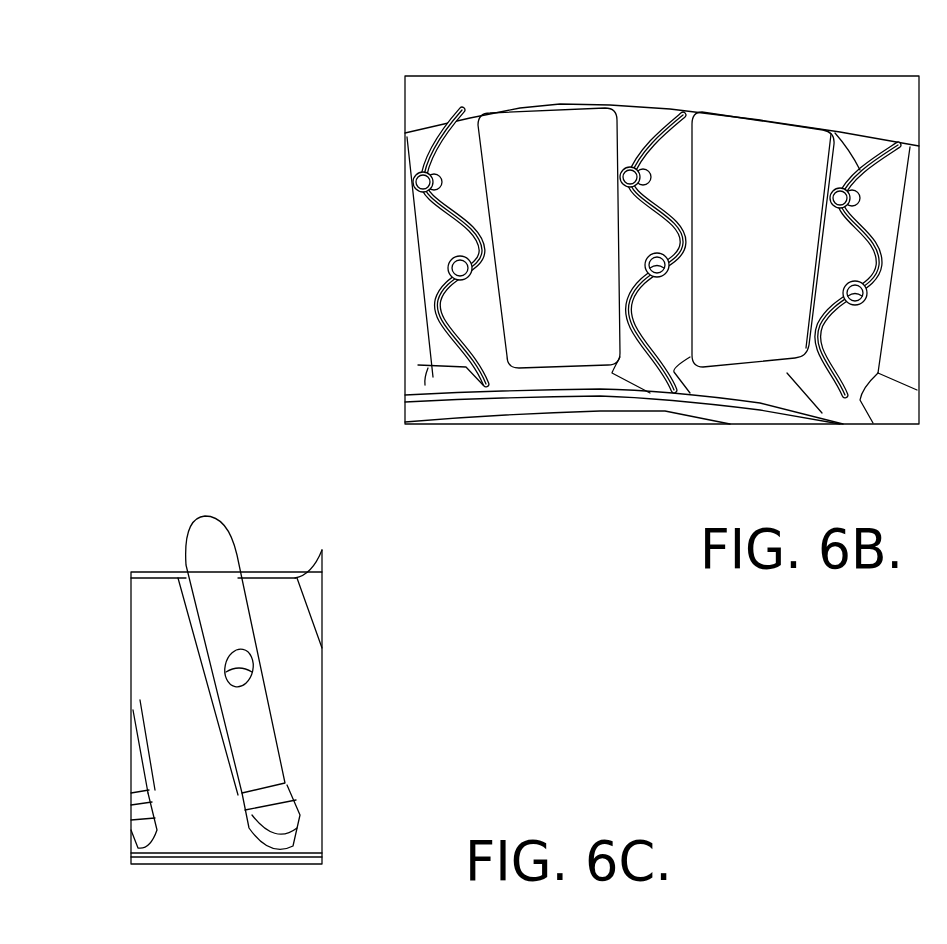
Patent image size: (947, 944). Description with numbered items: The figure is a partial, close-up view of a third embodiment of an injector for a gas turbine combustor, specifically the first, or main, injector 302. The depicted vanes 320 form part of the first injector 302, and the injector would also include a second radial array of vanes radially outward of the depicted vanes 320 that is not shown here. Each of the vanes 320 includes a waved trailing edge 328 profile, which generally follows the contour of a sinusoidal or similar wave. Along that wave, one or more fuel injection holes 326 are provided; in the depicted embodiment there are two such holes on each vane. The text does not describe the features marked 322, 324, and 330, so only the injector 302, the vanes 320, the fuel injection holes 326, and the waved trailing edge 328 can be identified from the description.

In FIG. 6B, the first injector 302 is at (591, 74).
In FIG. 6C, the first injector 302 is at (119, 606).
In FIG. 6B, the vanes 320 is at (425, 133).
In FIG. 6C, the vanes 320 is at (203, 647).
In FIG. 6B, the pocket 322 is at (522, 177).
In FIG. 6C, the aperture 324 is at (238, 662).
In FIG. 6B, the fuel injection holes 326 is at (654, 262).
In FIG. 6B, the waved trailing edge 328 is at (636, 330).
In FIG. 6C, the waved trailing edge 328 is at (263, 822).
In FIG. 6C, the conduit end 330 is at (202, 518).